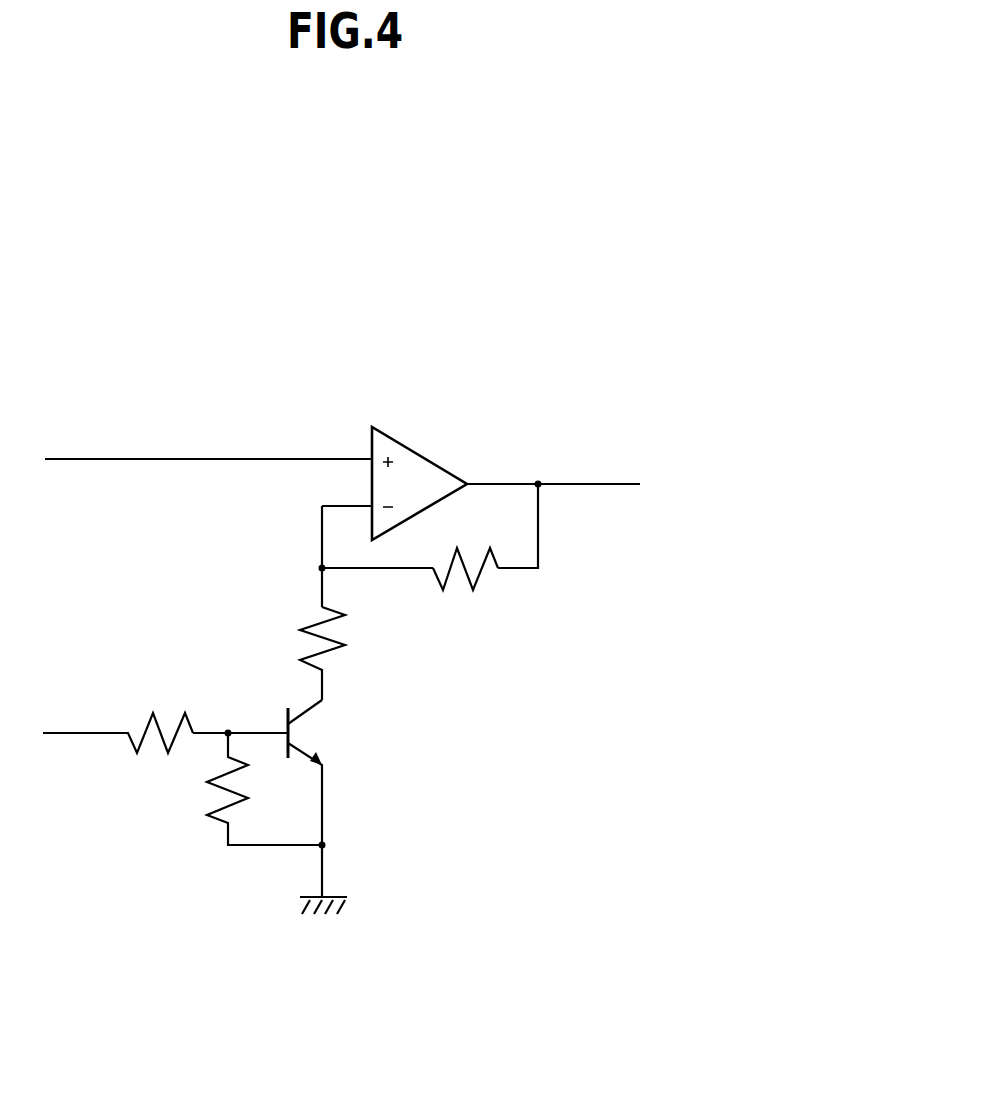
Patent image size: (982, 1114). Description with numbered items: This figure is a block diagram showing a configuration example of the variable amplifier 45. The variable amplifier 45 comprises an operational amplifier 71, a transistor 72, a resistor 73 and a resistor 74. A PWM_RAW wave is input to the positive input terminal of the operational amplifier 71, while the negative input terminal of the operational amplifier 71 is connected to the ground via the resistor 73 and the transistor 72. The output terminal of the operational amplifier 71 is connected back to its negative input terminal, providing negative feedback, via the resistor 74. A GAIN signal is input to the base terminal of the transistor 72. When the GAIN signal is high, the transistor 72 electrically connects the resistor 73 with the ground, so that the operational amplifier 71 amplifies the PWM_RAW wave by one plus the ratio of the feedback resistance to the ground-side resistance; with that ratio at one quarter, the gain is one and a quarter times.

The variable amplifier 45 is at (497, 418).
The operational amplifier 71 is at (425, 453).
The transistor 72 is at (340, 723).
The resistor 73 is at (282, 612).
The resistor 74 is at (495, 595).